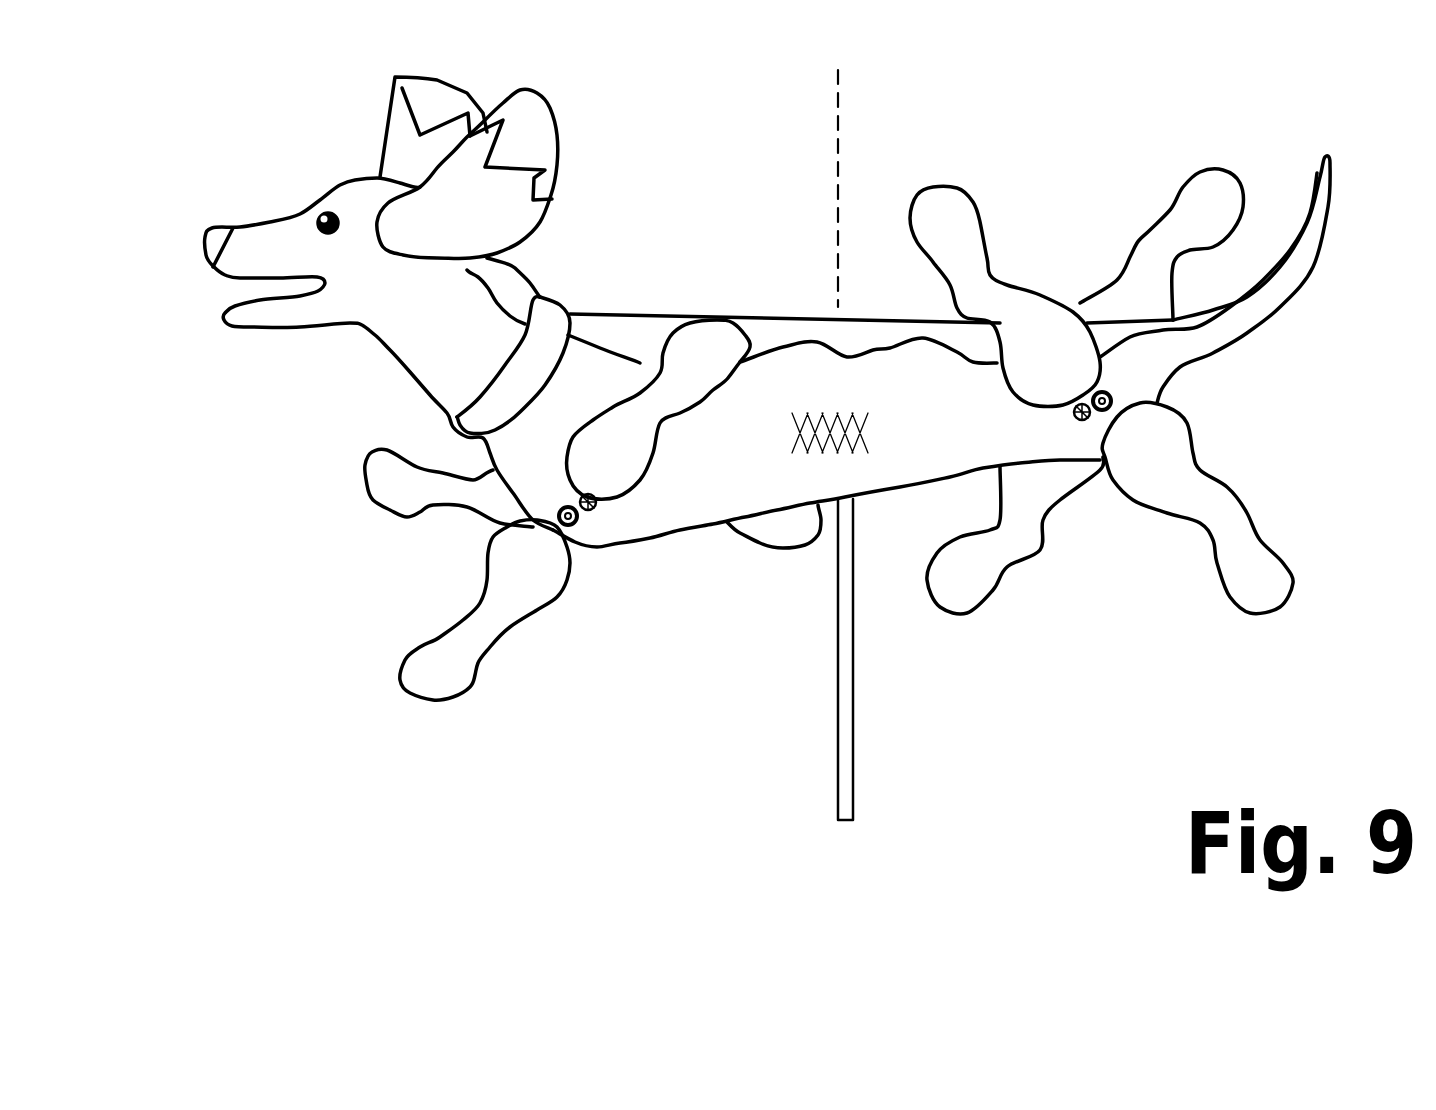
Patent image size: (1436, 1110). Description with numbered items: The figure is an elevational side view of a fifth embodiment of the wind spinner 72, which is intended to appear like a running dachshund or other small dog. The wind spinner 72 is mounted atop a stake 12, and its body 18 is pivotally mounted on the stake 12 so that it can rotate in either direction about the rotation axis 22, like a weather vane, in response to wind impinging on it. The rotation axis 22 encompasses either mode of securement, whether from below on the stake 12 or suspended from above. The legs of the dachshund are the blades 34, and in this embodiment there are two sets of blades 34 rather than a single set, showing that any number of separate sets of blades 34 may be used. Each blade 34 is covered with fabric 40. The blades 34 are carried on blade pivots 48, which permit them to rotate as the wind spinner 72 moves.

The wind spinner 72 is at (329, 134).
The body 18 is at (625, 312).
The blades 34 is at (380, 497).
The first blade pivot 48 is at (577, 527).
The fabric 40 is at (835, 412).
The rotation axis 22 is at (835, 90).
The stake 12 is at (855, 787).